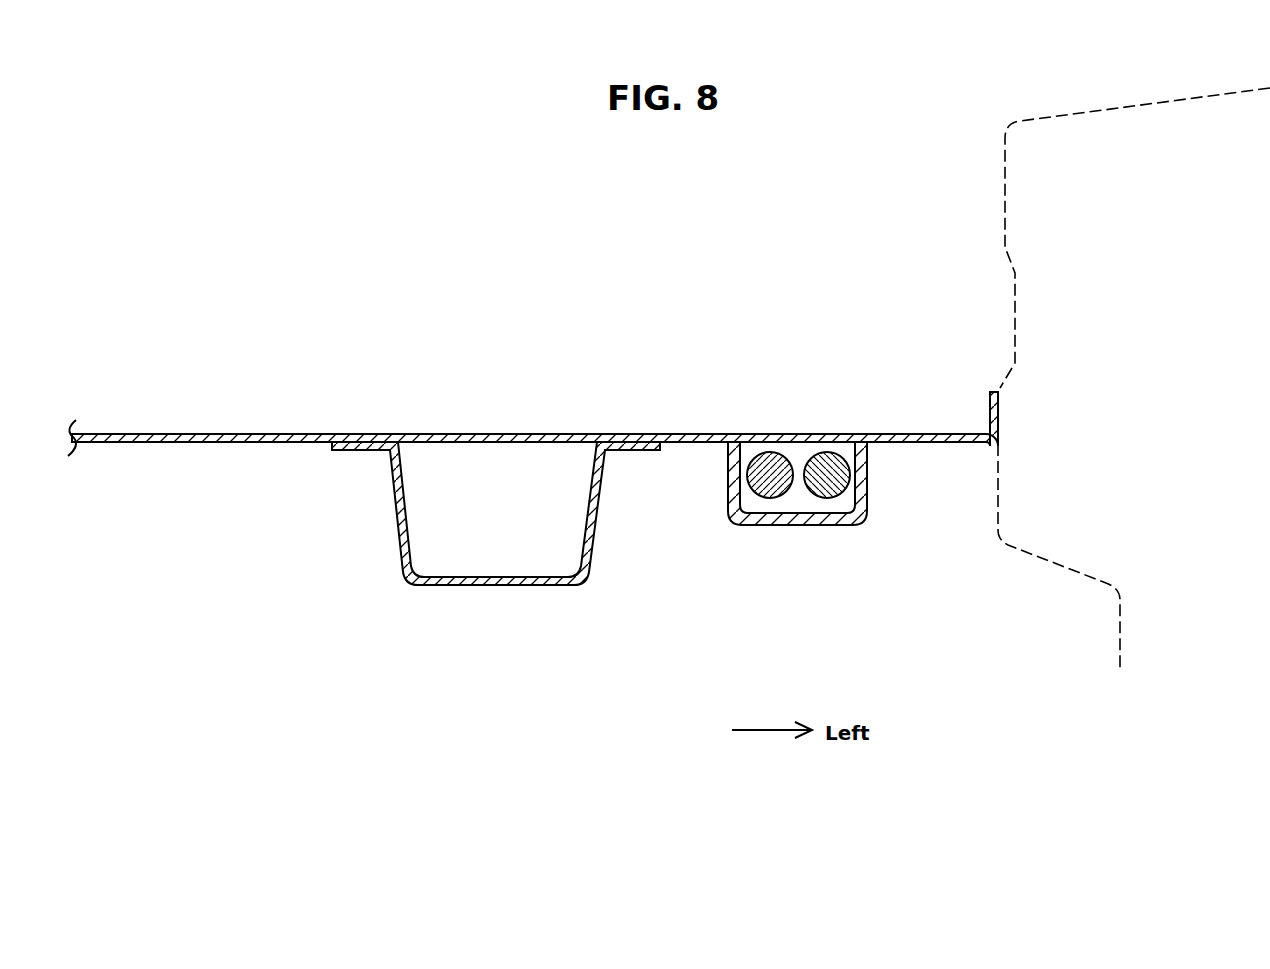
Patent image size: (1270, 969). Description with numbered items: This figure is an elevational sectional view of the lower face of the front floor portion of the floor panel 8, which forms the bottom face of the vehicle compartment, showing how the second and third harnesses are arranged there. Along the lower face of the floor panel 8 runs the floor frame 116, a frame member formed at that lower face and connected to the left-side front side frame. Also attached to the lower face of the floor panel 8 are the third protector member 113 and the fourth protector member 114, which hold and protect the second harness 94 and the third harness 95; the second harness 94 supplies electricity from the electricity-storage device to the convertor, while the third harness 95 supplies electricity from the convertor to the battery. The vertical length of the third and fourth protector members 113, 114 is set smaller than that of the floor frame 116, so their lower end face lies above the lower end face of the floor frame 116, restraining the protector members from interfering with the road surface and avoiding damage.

The floor panel 8 is at (223, 434).
The floor frame 116 is at (398, 522).
The third protector member 113 is at (847, 488).
The fourth protector member 114 is at (868, 477).
The third harness 95 is at (767, 498).
The second harness 94 is at (822, 498).